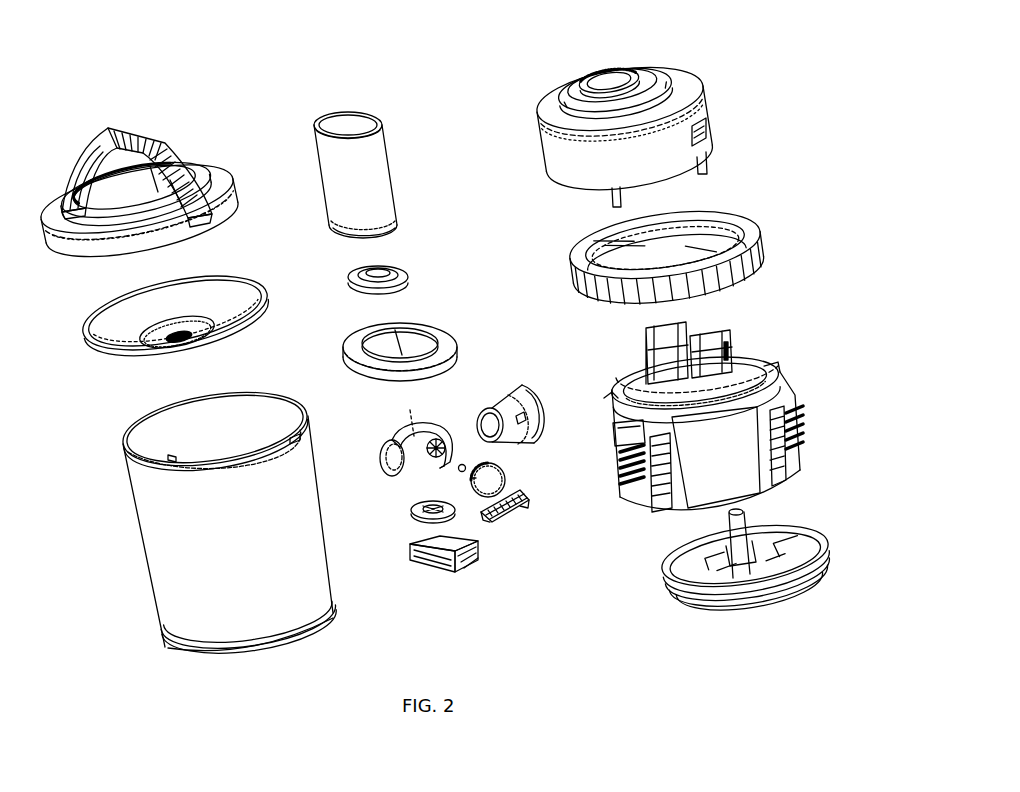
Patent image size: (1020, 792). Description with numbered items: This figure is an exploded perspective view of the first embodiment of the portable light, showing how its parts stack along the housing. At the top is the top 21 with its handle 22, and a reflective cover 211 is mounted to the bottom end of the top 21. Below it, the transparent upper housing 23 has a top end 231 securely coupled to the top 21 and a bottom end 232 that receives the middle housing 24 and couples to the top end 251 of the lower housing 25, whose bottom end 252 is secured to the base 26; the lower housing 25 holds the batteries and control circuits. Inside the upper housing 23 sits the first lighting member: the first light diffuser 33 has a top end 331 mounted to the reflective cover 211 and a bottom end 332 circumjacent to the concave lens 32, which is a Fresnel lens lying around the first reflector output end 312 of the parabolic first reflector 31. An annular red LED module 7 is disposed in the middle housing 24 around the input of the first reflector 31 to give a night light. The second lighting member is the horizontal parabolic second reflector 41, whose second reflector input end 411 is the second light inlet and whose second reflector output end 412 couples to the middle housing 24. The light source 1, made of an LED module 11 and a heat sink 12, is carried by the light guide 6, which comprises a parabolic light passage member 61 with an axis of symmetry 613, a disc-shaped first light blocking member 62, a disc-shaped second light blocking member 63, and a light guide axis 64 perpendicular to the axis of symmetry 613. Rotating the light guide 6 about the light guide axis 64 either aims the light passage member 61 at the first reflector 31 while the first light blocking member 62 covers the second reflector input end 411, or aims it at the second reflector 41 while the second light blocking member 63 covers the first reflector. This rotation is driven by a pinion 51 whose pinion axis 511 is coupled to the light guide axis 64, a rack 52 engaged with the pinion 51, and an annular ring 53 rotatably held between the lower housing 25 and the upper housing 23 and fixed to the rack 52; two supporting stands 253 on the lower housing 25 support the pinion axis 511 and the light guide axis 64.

The light source 1 is at (404, 536).
The LED module 11 is at (411, 512).
The heat sink 12 is at (423, 554).
The top 21 is at (215, 182).
The handle 22 is at (157, 136).
The reflective cover 211 is at (246, 280).
The transparent upper housing 23 is at (130, 536).
The top end of the upper housing 231 is at (125, 438).
The bottom end of the upper housing 232 is at (186, 656).
The first light diffuser 33 is at (395, 162).
The top end of the first light diffuser 331 is at (373, 112).
The bottom end of the first light diffuser 332 is at (397, 222).
The concave lens 32 is at (413, 270).
The annular red LED module 7 is at (458, 340).
The second reflector 41 is at (508, 385).
The second reflector input end 411 is at (478, 418).
The second reflector output end 412 is at (540, 398).
The light guide 6 is at (413, 441).
The light passage member 61 is at (400, 430).
The axis of symmetry 613 is at (397, 413).
The first light blocking member 62 is at (445, 446).
The second light blocking member 63 is at (388, 465).
The light guide axis 64 is at (465, 466).
The pinion 51 is at (500, 478).
The pinion axis 511 is at (471, 478).
The rack 52 is at (530, 511).
The middle housing 24 is at (702, 110).
The first reflector 31 is at (650, 80).
The first reflector output end 312 is at (592, 78).
The annular ring 53 is at (752, 236).
The lower housing 25 is at (732, 396).
The top end of the lower housing 251 is at (776, 362).
The bottom end of the lower housing 252 is at (790, 478).
The supporting stands 253 is at (676, 346).
The base 26 is at (808, 591).